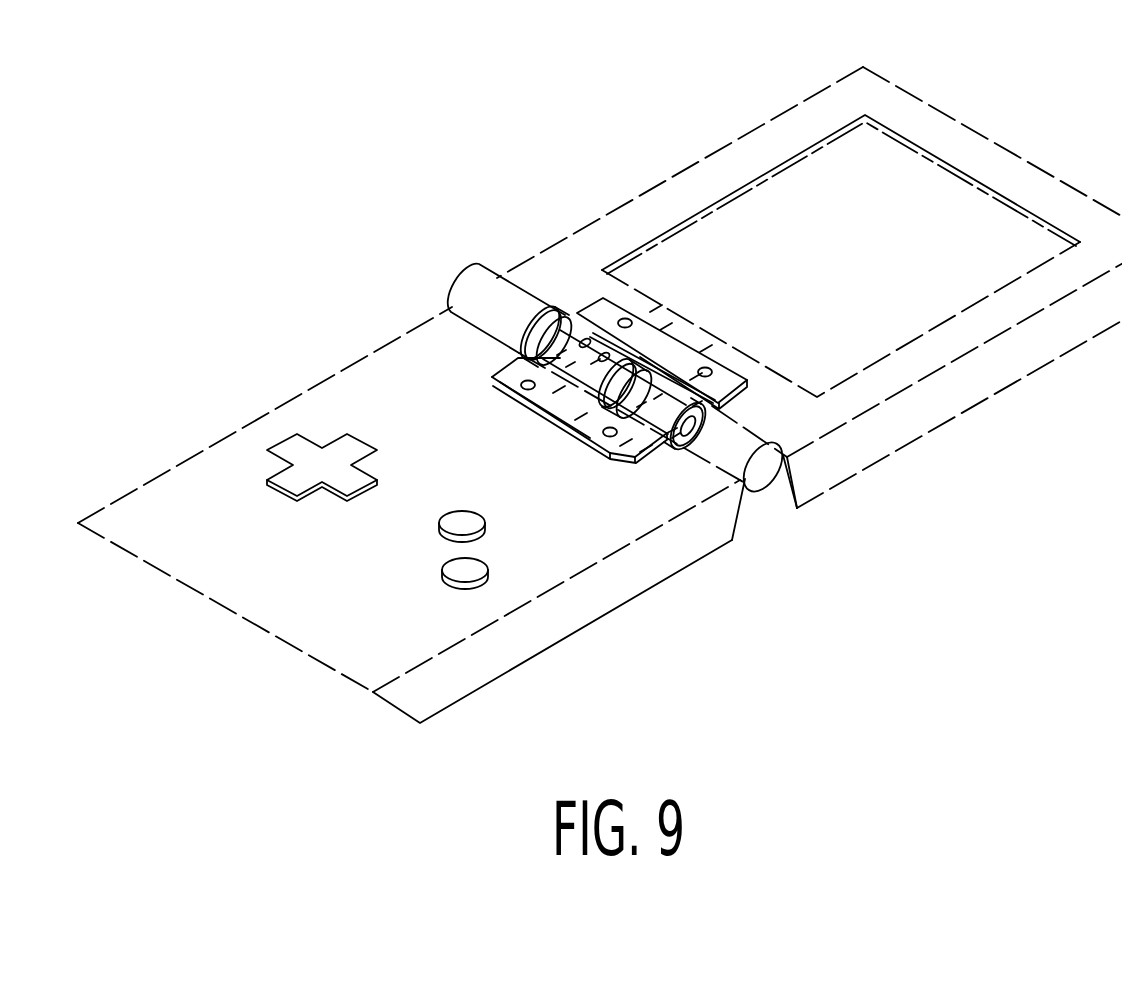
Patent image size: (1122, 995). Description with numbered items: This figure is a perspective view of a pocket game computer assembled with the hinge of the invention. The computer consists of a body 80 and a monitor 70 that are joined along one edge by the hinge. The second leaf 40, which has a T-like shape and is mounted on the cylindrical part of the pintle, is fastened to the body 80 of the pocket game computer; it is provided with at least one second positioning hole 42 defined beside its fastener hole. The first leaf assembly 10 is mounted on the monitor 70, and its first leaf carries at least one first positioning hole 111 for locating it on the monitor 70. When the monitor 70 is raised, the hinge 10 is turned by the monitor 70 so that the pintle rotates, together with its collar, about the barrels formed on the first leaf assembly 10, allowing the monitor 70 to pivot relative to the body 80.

The first leaf assembly 10 is at (671, 356).
The first positioning hole 111 is at (711, 370).
The second leaf 40 is at (540, 399).
The second positioning hole 42 is at (604, 430).
The monitor 70 is at (954, 143).
The body 80 is at (616, 600).